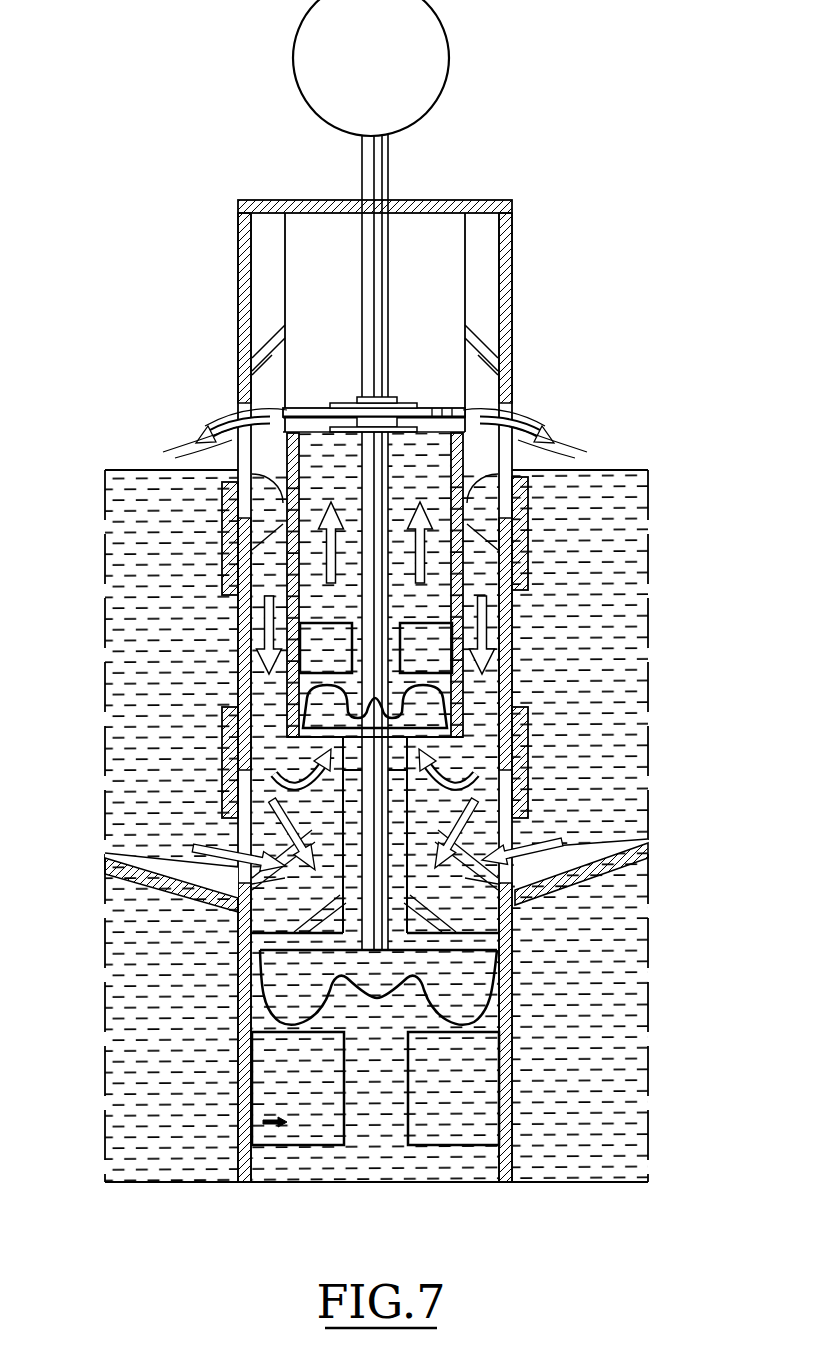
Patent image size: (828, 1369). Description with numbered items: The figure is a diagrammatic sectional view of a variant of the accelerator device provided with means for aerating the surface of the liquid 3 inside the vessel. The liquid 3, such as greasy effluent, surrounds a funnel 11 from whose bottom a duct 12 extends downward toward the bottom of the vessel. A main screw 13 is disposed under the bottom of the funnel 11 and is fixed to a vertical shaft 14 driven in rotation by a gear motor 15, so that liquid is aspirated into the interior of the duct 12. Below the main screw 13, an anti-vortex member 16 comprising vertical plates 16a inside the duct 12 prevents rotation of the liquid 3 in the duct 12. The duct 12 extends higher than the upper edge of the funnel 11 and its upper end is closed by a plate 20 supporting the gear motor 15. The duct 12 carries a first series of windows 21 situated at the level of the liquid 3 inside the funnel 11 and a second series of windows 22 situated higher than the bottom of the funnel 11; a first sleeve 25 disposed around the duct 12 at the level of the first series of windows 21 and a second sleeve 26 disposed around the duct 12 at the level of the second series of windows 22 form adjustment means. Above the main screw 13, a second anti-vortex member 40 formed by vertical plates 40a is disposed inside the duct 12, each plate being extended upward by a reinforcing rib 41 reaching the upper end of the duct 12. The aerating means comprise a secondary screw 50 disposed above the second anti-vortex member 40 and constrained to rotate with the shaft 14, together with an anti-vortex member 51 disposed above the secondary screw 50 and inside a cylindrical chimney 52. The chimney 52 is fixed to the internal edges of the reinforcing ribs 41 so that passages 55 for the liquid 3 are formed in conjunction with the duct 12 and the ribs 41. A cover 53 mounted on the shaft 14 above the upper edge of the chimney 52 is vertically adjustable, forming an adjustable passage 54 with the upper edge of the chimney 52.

The liquid 3 is at (612, 527).
The funnel 11 is at (648, 872).
The duct 12 is at (510, 1183).
The main screw 13 is at (467, 987).
The vertical shaft 14 is at (372, 342).
The gear motor 15 is at (443, 102).
The anti-vortex member 16 is at (240, 1122).
The vertical plates 16a is at (462, 1116).
The plate 20 is at (432, 201).
The first series of windows 21 is at (513, 410).
The second series of windows 22 is at (514, 828).
The first sleeve 25 is at (222, 542).
The second sleeve 26 is at (222, 760).
The second anti-vortex member 40 is at (258, 956).
The vertical plates 40a is at (110, 853).
The reinforcing rib 41 is at (262, 289).
The secondary screw 50 is at (465, 700).
The anti-vortex member 51 is at (322, 651).
The cylindrical chimney 52 is at (283, 558).
The cover 53 is at (312, 407).
The adjustable passage 54 is at (283, 412).
The passages 55 is at (477, 572).